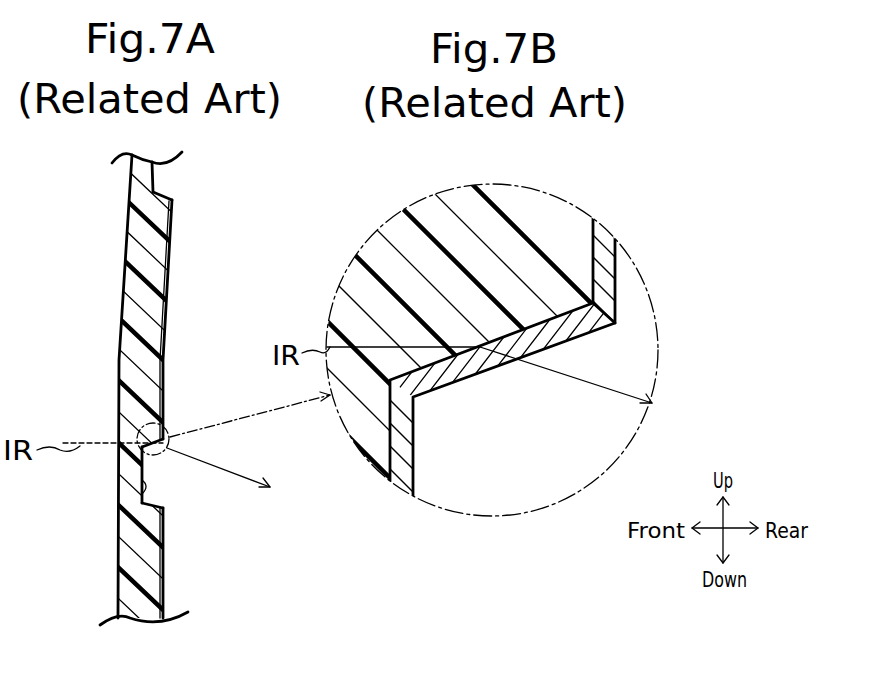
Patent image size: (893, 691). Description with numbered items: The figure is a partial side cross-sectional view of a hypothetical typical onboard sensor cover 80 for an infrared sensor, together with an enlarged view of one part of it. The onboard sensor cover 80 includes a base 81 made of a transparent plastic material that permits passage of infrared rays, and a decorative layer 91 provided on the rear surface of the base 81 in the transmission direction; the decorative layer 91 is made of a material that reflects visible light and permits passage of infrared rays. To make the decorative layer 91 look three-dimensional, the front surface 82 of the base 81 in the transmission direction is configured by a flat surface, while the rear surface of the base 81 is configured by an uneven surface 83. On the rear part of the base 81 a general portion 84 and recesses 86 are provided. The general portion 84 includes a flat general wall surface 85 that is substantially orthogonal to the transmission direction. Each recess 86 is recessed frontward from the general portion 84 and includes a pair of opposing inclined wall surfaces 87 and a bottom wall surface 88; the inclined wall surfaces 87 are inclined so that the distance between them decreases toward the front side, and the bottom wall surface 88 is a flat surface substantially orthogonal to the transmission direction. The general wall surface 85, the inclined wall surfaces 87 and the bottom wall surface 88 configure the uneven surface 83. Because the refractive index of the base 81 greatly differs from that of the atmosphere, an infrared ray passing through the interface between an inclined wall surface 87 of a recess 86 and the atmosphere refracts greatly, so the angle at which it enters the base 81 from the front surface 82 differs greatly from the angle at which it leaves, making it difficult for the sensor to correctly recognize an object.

In FIG. 7A, the onboard sensor cover 80 is at (85, 192).
In FIG. 7A, the base 81 is at (127, 280).
In FIG. 7B, the base 81 is at (405, 228).
In FIG. 7A, the front surface 82 is at (117, 595).
In FIG. 7A, the uneven surface 83 is at (157, 168).
In FIG. 7A, the general portion 84 is at (160, 248).
In FIG. 7B, the general portion 84 is at (557, 212).
In FIG. 7B, the general wall surface 85 is at (603, 232).
In FIG. 7A, the recess 86 is at (165, 186).
In FIG. 7B, the recess 86 is at (535, 475).
In FIG. 7A, the inclined wall surface 87 is at (140, 449).
In FIG. 7B, the inclined wall surface 87 is at (590, 330).
In FIG. 7A, the bottom wall surface 88 is at (143, 488).
In FIG. 7B, the bottom wall surface 88 is at (402, 470).
In FIG. 7A, the decorative layer 91 is at (168, 282).
In FIG. 7B, the decorative layer 91 is at (408, 433).